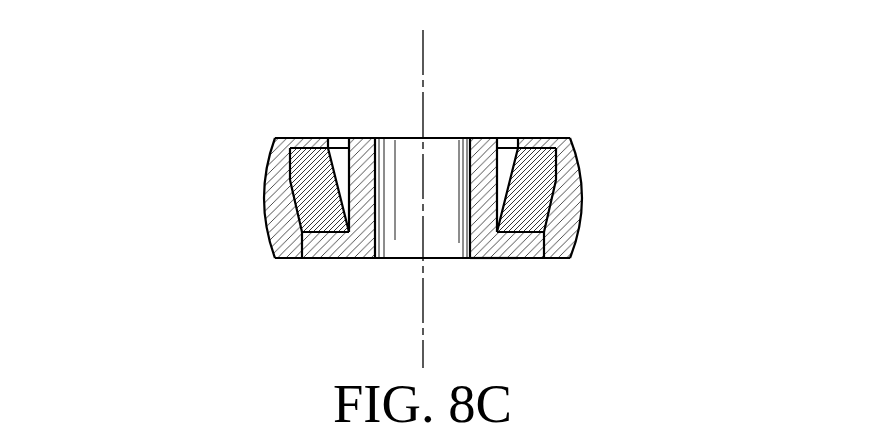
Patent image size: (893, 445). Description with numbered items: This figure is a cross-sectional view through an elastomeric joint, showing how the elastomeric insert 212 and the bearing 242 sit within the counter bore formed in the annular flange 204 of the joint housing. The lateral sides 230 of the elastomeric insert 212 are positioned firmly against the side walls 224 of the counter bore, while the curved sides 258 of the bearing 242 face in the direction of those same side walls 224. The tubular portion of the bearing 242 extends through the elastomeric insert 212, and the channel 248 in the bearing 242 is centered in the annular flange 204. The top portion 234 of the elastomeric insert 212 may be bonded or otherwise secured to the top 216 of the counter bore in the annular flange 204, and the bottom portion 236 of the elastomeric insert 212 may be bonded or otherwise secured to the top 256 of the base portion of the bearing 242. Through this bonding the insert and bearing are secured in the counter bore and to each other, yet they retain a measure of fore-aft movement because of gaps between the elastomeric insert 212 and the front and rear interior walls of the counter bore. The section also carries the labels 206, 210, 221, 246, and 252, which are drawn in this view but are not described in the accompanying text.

The annular flange 204 is at (262, 208).
The top surface 206 is at (281, 137).
The upper wall portion 210 is at (338, 146).
The elastomeric insert 212 is at (320, 238).
The top of the counter bore 216 is at (303, 146).
The central axis 221 is at (422, 50).
The side walls of the counter bore 224 is at (298, 260).
The lateral sides of the elastomeric insert 230 is at (292, 189).
The top portion of the elastomeric insert 234 is at (310, 147).
The bottom portion of the elastomeric insert 236 is at (497, 258).
The bearing 242 is at (360, 250).
The central bore 246 is at (483, 137).
The channel in the bearing 248 is at (412, 258).
The annular groove 252 is at (330, 259).
The top of the base portion of the bearing 256 is at (503, 258).
The curved sides of the bearing 258 is at (302, 242).